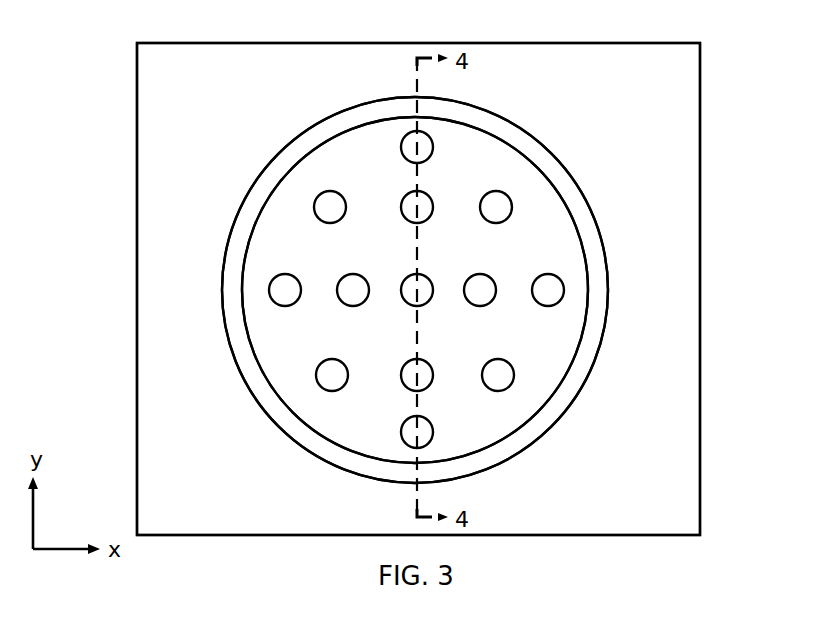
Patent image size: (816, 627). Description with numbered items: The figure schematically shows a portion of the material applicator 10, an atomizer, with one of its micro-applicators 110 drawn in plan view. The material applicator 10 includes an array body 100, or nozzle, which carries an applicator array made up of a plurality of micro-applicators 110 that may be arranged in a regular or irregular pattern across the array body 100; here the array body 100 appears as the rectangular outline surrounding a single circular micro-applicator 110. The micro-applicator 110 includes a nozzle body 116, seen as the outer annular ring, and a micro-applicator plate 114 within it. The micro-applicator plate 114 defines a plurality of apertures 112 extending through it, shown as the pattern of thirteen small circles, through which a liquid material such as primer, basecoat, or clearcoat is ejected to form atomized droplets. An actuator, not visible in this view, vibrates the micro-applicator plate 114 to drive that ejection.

The material applicator 10 is at (690, 80).
The array body 100 is at (535, 72).
The micro-applicator 110 is at (257, 160).
The apertures 112 is at (561, 283).
The micro-applicator plate 114 is at (550, 355).
The nozzle body 116 is at (552, 170).